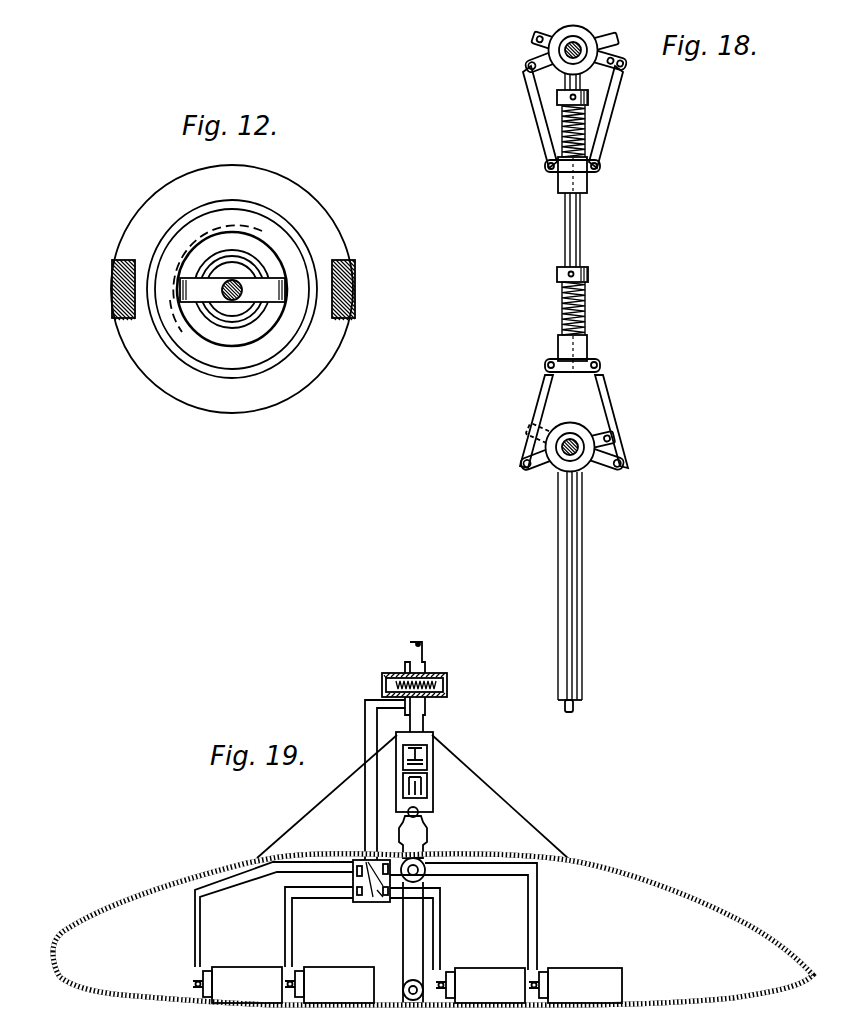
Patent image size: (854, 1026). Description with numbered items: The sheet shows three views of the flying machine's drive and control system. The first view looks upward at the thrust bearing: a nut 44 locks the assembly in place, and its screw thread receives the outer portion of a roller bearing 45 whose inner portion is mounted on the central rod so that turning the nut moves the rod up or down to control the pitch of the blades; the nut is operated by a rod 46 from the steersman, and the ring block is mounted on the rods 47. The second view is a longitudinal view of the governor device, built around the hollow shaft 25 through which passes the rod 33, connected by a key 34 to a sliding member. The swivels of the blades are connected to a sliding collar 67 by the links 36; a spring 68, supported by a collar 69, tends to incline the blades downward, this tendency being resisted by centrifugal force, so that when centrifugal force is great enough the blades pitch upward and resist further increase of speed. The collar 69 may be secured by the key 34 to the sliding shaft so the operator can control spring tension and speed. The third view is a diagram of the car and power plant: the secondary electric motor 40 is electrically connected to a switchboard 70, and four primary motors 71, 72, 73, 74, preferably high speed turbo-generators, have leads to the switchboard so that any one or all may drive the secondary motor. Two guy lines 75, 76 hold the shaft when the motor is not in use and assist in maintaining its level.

In FIG. 12, the nut 44 is at (280, 338).
In FIG. 12, the roller bearing 45 is at (263, 248).
In FIG. 12, the rod 46 is at (213, 310).
In FIG. 12, the rods 47 is at (356, 291).
In FIG. 18, the shaft 25 is at (587, 229).
In FIG. 18, the rod 33 is at (574, 710).
In FIG. 18, the key 34 is at (557, 273).
In FIG. 18, the rods 36 is at (535, 113).
In FIG. 18, the sliding collar 67 is at (588, 183).
In FIG. 18, the spring 68 is at (568, 133).
In FIG. 18, the collar 69 is at (588, 98).
In FIG. 19, the electric motor 40 is at (447, 684).
In FIG. 19, the switchboard 70 is at (360, 862).
In FIG. 19, the primary motor 71 is at (240, 994).
In FIG. 19, the primary motor 72 is at (337, 994).
In FIG. 19, the primary motor 73 is at (495, 997).
In FIG. 19, the primary motor 74 is at (587, 997).
In FIG. 19, the guy line 75 is at (312, 812).
In FIG. 19, the guy line 76 is at (503, 795).